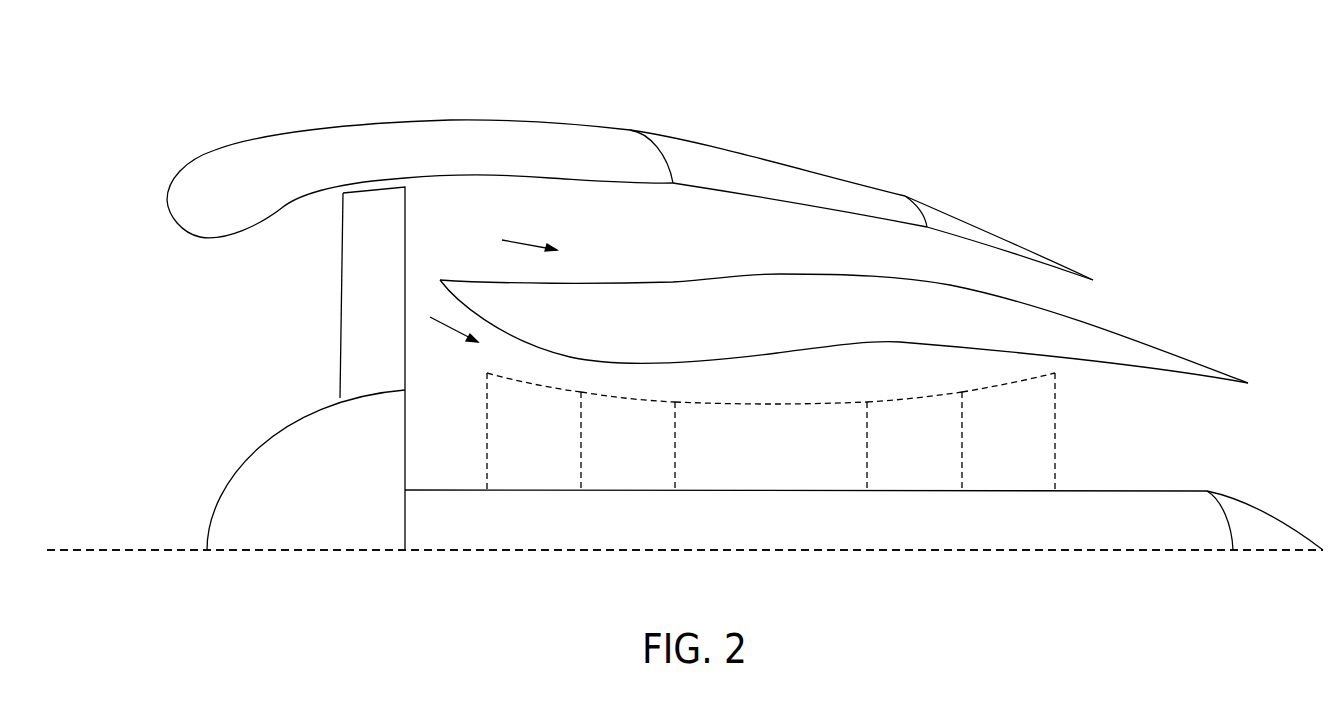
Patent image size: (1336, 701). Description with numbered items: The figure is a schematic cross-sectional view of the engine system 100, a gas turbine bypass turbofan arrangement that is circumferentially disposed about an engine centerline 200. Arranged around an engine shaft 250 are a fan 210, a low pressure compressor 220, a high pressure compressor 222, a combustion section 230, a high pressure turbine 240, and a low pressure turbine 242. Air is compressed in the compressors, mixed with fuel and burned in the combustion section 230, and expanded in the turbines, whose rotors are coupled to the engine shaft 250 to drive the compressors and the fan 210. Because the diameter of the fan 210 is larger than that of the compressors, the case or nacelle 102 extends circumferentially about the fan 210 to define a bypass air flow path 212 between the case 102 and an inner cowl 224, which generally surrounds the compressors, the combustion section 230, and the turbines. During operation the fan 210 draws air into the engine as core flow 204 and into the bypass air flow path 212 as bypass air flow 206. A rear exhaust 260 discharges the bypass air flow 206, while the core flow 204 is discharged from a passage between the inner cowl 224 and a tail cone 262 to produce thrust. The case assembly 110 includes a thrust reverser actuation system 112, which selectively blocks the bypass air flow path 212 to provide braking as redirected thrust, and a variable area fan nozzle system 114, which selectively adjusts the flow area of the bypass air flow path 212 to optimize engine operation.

The engine system 100 is at (685, 312).
The case 102 is at (462, 133).
The case assembly 110 is at (630, 155).
The thrust reverser actuation system 112 is at (767, 153).
The variable area fan nozzle system 114 is at (963, 217).
The engine centerline 200 is at (145, 550).
The core flow 204 is at (458, 330).
The bypass air flow 206 is at (523, 242).
The fan 210 is at (340, 322).
The bypass air flow path 212 is at (655, 257).
The low pressure compressor 220 is at (565, 475).
The high pressure compressor 222 is at (655, 475).
The inner cowl 224 is at (770, 277).
The combustion section 230 is at (807, 475).
The high pressure turbine 240 is at (943, 475).
The low pressure turbine 242 is at (1033, 475).
The engine shaft 250 is at (640, 542).
The rear exhaust 260 is at (1183, 285).
The tail cone 262 is at (1260, 508).